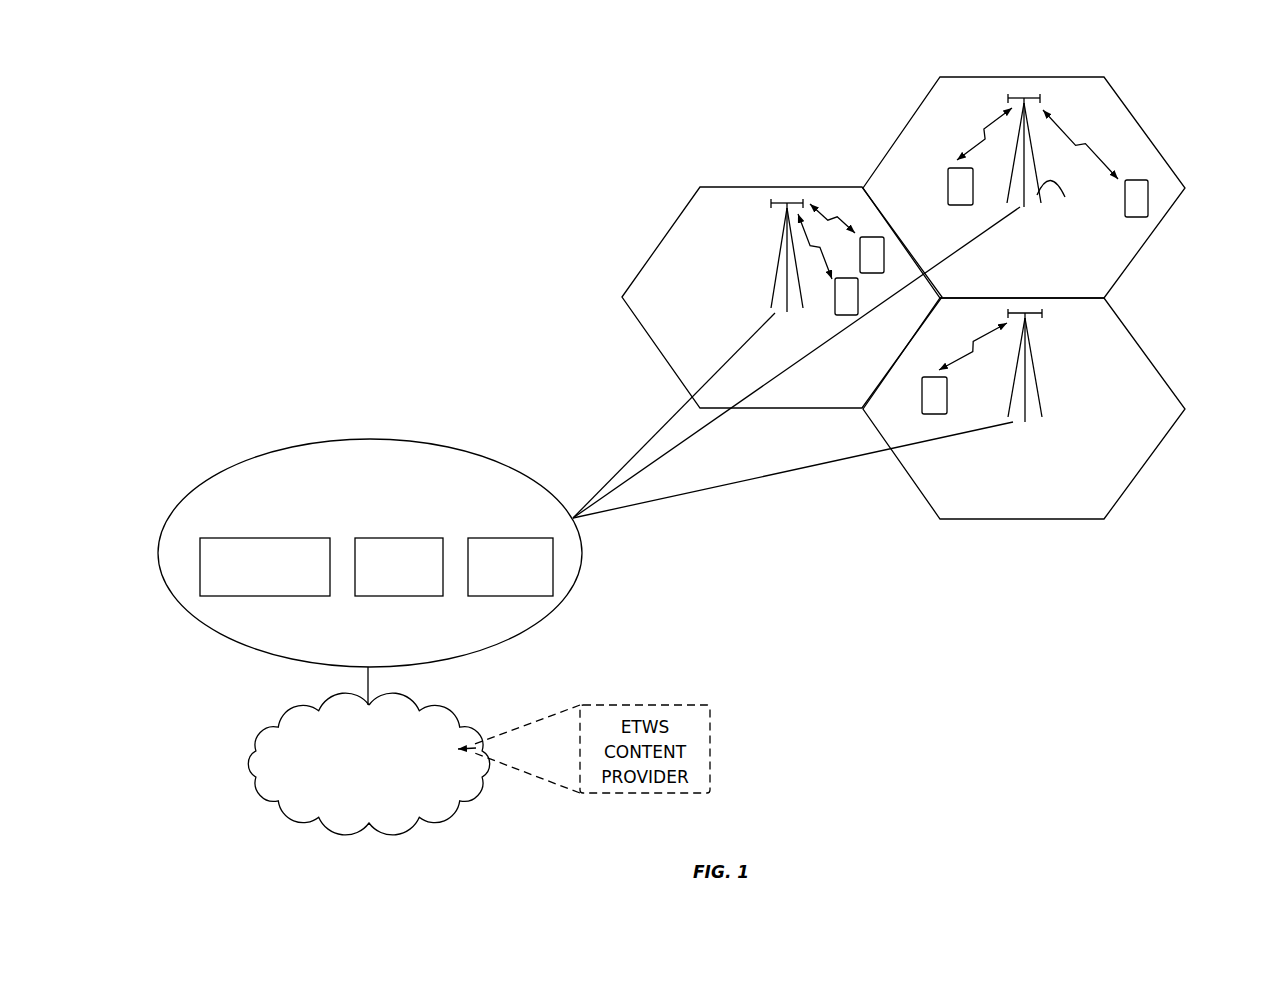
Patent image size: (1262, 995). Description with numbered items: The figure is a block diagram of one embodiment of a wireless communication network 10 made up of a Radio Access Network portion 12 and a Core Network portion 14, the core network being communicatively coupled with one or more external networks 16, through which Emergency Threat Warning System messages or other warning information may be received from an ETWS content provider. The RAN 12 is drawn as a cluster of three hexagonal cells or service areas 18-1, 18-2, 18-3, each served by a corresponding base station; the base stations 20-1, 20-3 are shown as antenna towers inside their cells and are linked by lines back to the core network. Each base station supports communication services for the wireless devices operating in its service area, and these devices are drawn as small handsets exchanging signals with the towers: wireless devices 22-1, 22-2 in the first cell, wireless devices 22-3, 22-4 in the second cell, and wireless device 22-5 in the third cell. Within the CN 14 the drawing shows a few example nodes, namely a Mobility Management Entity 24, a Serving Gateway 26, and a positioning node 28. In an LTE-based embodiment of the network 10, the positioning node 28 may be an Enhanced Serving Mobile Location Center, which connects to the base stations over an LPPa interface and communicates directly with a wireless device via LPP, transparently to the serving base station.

The wireless communication network 10 is at (485, 105).
The Radio Access Network portion 12 is at (962, 47).
The Core Network portion 14 is at (391, 501).
The external networks 16 is at (380, 799).
The service area 18-1 is at (660, 355).
The service area 18-2 is at (1147, 125).
The service area 18-3 is at (1148, 345).
The base station 20-1 is at (770, 292).
The base station 20-3 is at (1040, 400).
The wireless device 22-1 is at (868, 237).
The wireless device 22-2 is at (835, 308).
The wireless device 22-3 is at (948, 182).
The wireless device 22-4 is at (1125, 210).
The wireless device 22-5 is at (947, 384).
The Mobility Management Entity 24 is at (522, 588).
The Serving Gateway 26 is at (411, 588).
The positioning node 28 is at (277, 588).